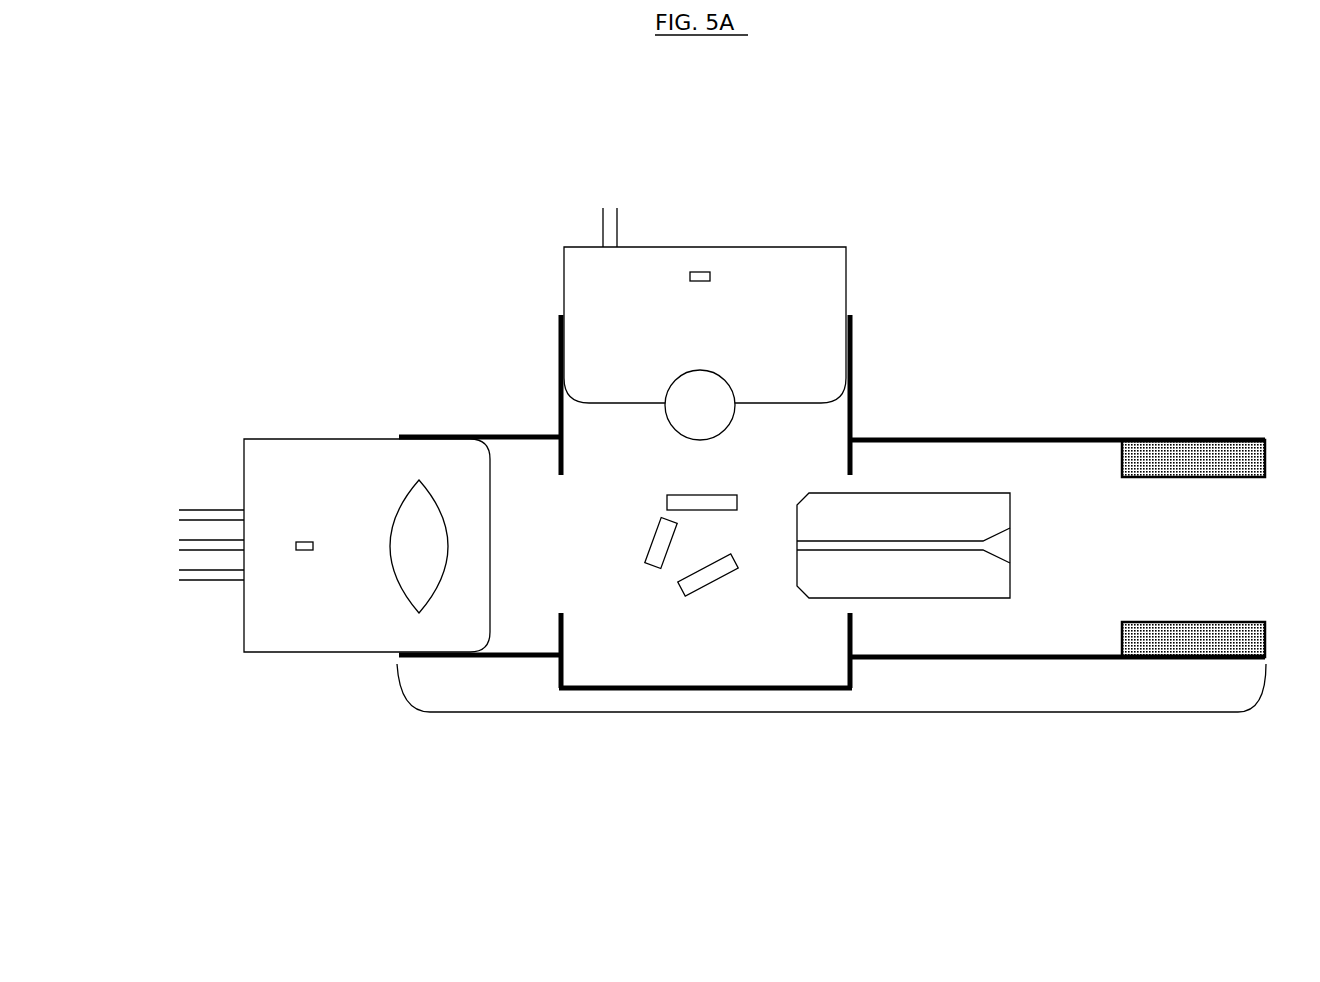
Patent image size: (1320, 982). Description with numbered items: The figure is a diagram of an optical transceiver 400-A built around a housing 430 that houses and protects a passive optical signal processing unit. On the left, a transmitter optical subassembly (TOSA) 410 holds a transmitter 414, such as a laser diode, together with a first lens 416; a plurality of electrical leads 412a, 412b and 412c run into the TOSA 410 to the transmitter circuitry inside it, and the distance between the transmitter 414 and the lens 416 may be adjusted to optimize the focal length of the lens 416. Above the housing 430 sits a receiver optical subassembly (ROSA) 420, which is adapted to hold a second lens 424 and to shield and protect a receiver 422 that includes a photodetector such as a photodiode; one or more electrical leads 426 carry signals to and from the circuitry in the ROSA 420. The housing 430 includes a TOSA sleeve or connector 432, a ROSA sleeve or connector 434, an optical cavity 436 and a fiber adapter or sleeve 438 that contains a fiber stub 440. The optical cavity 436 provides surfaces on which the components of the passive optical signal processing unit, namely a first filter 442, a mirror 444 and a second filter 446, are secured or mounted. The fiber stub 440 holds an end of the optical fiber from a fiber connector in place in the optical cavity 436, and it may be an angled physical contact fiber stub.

The optical transceiver 400-A is at (462, 152).
The transmitter optical subassembly (TOSA) 410 is at (368, 437).
The electrical lead 412a is at (207, 509).
The electrical lead 412b is at (182, 540).
The electrical lead 412c is at (207, 580).
The transmitter 414 is at (309, 538).
The first lens 416 is at (407, 600).
The receiver optical subassembly (ROSA) 420 is at (562, 293).
The receiver 422 is at (700, 283).
The second lens 424 is at (700, 405).
The electrical leads 426 is at (619, 228).
The housing 430 is at (825, 712).
The TOSA sleeve or connector 432 is at (510, 662).
The ROSA sleeve or connector 434 is at (558, 402).
The optical cavity 436 is at (730, 547).
The fiber adapter or sleeve 438 is at (1068, 440).
The fiber stub 440 is at (920, 493).
The first filter 442 is at (652, 571).
The mirror 444 is at (703, 590).
The second filter 446 is at (725, 493).